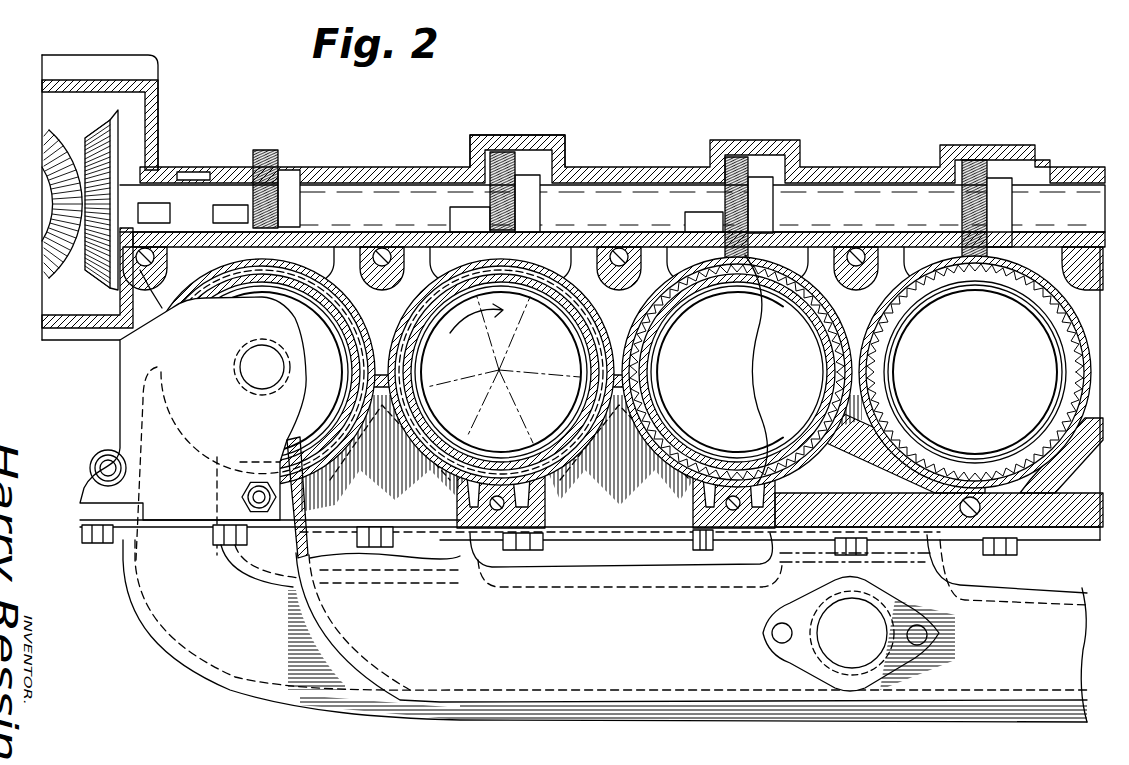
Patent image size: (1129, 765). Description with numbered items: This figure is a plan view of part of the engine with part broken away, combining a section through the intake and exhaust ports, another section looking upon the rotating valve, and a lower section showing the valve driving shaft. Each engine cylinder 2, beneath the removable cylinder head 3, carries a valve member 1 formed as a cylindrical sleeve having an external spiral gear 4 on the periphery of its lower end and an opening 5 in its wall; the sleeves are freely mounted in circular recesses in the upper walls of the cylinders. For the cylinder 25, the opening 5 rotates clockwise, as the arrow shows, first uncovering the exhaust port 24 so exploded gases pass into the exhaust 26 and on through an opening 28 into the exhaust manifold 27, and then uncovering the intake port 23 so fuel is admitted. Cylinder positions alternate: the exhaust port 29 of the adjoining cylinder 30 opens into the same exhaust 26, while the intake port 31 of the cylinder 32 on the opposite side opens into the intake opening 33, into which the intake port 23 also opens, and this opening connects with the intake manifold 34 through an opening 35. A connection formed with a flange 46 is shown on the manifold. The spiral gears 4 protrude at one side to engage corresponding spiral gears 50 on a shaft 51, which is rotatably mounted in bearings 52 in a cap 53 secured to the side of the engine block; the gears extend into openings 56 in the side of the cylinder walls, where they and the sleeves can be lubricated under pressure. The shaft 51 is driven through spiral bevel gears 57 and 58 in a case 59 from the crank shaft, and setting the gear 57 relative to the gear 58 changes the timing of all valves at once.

The valve member 1 is at (578, 333).
The engine cylinder 2 is at (1055, 527).
The removable cylinder head 3 is at (120, 402).
The spiral gear 4 is at (843, 353).
The opening 5 is at (522, 293).
The intake port 23 is at (428, 417).
The exhaust port 24 is at (566, 423).
The cylinder 25 is at (503, 370).
The exhaust 26 is at (622, 457).
The exhaust manifold 27 is at (215, 655).
The opening 28 is at (613, 530).
The exhaust port 29 is at (660, 440).
The adjoining cylinder 30 is at (698, 348).
The intake port 31 is at (340, 418).
The cylinder 32 is at (307, 353).
The intake opening 33 is at (385, 456).
The intake manifold 34 is at (367, 635).
The opening 35 is at (411, 535).
The flange 46 is at (782, 647).
The spiral gear 50 is at (272, 150).
The shaft 51 is at (626, 205).
The bearing 52 is at (463, 170).
The cap 53 is at (560, 136).
The opening 56 is at (1020, 248).
The spiral bevel gear 57 is at (120, 124).
The spiral bevel gear 58 is at (42, 152).
The case 59 is at (55, 90).